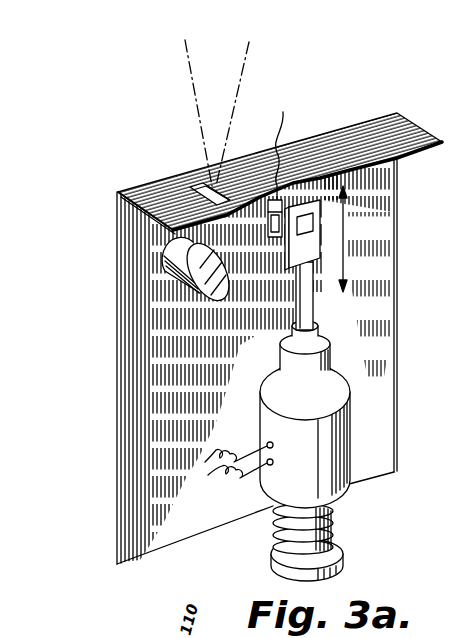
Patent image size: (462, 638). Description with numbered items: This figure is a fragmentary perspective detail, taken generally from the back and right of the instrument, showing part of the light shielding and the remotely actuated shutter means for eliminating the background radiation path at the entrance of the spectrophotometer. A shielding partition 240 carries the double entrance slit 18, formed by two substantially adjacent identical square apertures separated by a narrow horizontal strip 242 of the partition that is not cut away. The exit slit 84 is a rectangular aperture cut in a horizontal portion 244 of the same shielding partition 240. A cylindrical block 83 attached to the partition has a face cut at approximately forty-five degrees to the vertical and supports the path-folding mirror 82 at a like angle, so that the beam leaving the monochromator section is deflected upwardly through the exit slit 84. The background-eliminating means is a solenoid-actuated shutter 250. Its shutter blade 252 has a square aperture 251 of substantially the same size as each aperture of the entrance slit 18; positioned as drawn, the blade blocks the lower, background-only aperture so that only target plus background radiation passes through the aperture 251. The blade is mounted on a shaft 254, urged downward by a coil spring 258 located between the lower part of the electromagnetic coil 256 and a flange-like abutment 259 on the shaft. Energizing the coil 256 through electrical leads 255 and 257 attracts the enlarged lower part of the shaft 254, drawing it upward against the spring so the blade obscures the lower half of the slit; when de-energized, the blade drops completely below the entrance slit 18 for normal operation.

The entrance slit 18 is at (286, 143).
The path-folding mirror 82 is at (200, 290).
The cylindrical block 83 is at (164, 256).
The exit slit 84 is at (200, 186).
The shielding partition 240 is at (343, 307).
The narrow horizontal strip 242 is at (277, 222).
The horizontal portion 244 is at (333, 135).
The solenoid-actuated shutter 250 is at (348, 366).
The square aperture 251 is at (320, 228).
The shutter blade 252 is at (313, 252).
The shaft 254 is at (308, 313).
The electrical lead 255 is at (212, 478).
The electromagnetic coil 256 is at (350, 447).
The electrical lead 257 is at (211, 456).
The coil spring 258 is at (330, 522).
The flange-like abutment 259 is at (330, 571).